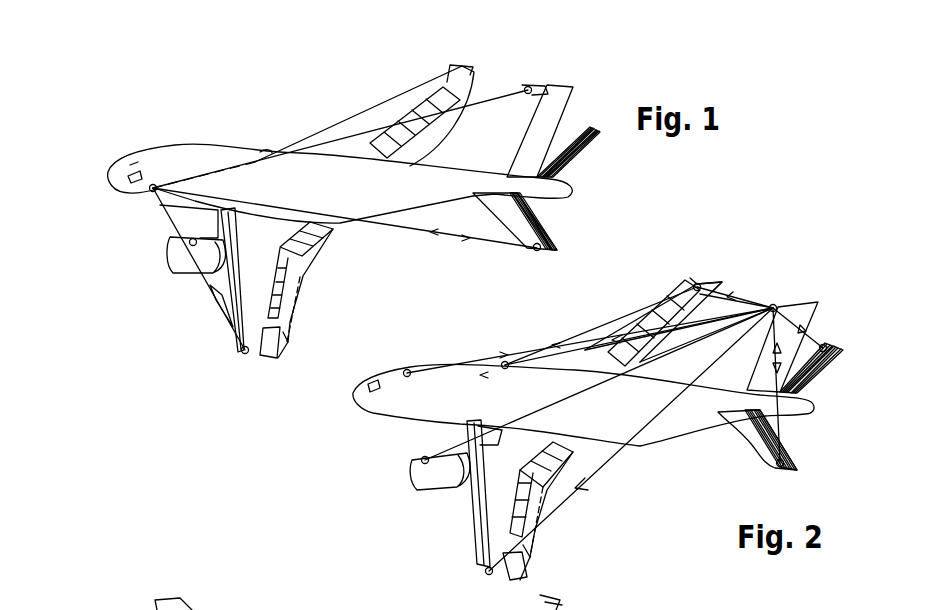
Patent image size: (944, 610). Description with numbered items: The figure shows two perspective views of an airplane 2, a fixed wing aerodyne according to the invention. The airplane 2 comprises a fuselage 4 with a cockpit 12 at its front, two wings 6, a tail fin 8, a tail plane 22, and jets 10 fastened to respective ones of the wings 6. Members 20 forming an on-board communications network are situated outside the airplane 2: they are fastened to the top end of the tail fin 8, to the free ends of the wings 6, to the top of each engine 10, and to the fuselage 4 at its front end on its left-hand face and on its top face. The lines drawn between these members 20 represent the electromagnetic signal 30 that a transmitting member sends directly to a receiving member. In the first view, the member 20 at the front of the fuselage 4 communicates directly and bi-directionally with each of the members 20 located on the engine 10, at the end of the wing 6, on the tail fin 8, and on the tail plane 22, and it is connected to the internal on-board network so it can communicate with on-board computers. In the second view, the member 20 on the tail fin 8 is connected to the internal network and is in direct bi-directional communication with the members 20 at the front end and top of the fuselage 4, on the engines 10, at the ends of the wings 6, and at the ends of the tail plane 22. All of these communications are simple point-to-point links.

In FIG. 1, the airplane 2 is at (304, 108).
In FIG. 2, the airplane 2 is at (786, 215).
In FIG. 1, the fuselage 4 is at (177, 158).
In FIG. 2, the fuselage 4 is at (692, 420).
In FIG. 1, the wings 6 is at (387, 110).
In FIG. 2, the wings 6 is at (502, 527).
In FIG. 1, the tail fin 8 is at (530, 110).
In FIG. 2, the tail fin 8 is at (793, 307).
In FIG. 1, the jets 10 is at (270, 150).
In FIG. 2, the jets 10 is at (423, 480).
In FIG. 1, the cockpit 12 is at (133, 152).
In FIG. 2, the cockpit 12 is at (374, 386).
In FIG. 1, the members 20 is at (149, 190).
In FIG. 2, the members 20 is at (408, 369).
In FIG. 1, the tail plane 22 is at (513, 227).
In FIG. 2, the tail plane 22 is at (757, 430).
In FIG. 1, the electromagnetic signal 30 is at (517, 97).
In FIG. 2, the electromagnetic signal 30 is at (543, 343).